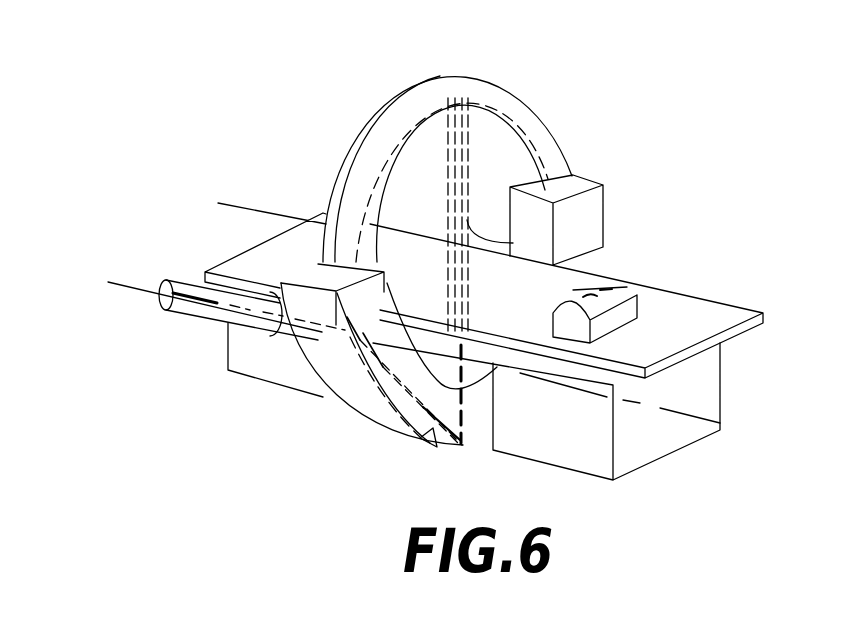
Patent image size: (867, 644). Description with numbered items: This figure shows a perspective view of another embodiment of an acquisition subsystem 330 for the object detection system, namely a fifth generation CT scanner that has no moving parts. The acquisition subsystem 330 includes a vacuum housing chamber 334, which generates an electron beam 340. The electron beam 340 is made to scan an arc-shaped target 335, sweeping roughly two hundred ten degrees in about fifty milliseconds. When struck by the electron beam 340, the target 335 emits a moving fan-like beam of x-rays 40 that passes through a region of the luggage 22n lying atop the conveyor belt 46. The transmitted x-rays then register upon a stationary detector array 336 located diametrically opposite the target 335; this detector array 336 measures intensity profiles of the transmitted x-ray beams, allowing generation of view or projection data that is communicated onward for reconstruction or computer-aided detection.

The acquisition subsystem 330 is at (648, 127).
The detector array 336 is at (478, 113).
The fan-like beam of x-rays 40 is at (607, 187).
The luggage 22n is at (623, 307).
The conveyor belt 46 is at (735, 313).
The vacuum housing chamber 334 is at (192, 300).
The electron beam 340 is at (243, 370).
The arc-shaped target 335 is at (430, 440).